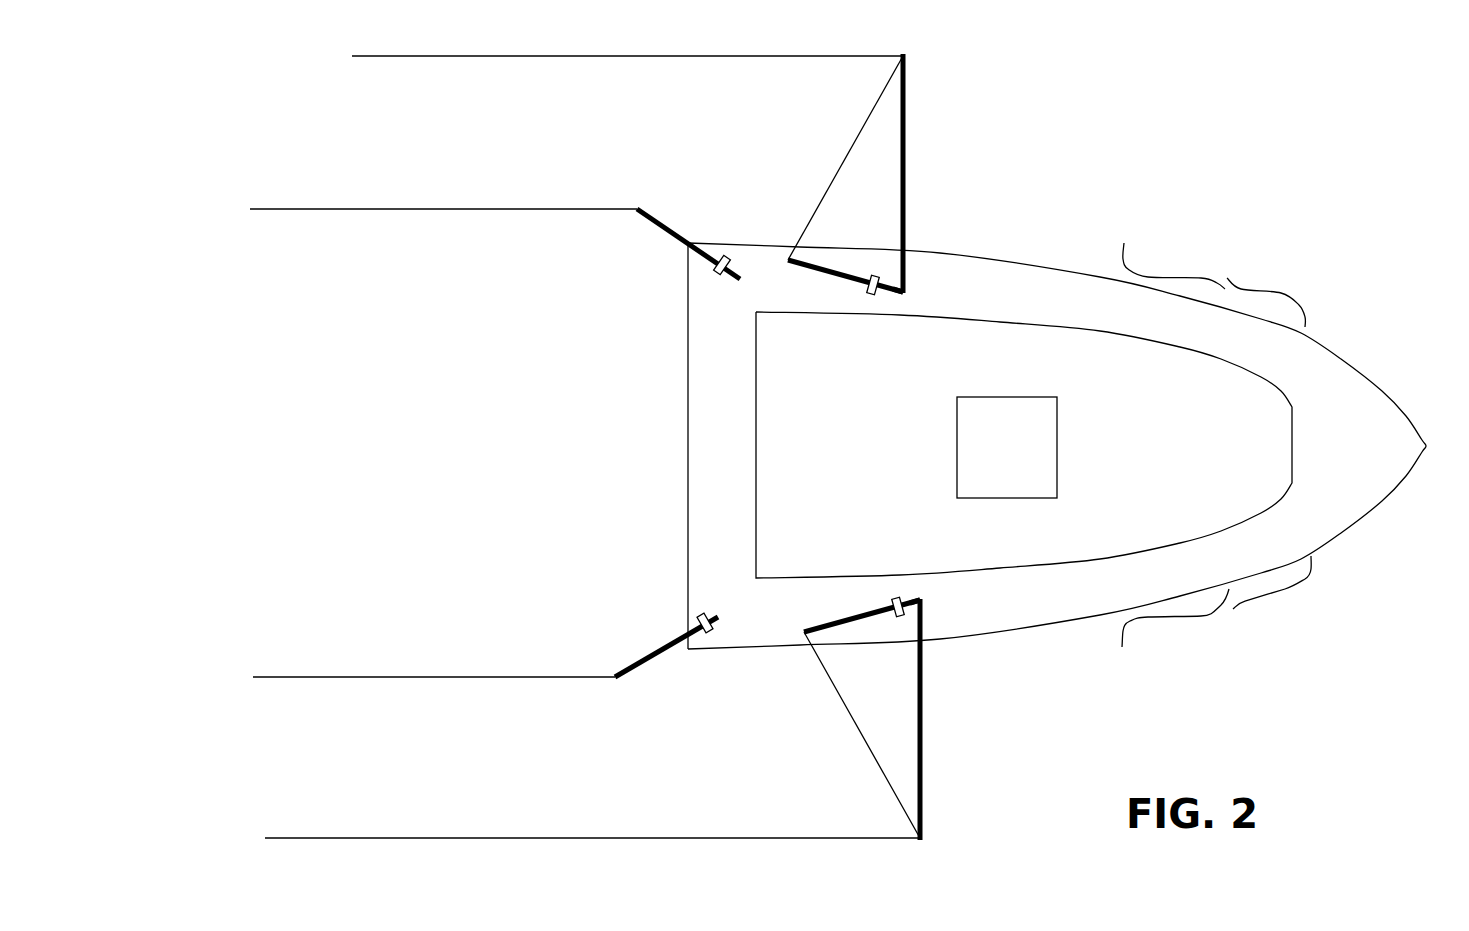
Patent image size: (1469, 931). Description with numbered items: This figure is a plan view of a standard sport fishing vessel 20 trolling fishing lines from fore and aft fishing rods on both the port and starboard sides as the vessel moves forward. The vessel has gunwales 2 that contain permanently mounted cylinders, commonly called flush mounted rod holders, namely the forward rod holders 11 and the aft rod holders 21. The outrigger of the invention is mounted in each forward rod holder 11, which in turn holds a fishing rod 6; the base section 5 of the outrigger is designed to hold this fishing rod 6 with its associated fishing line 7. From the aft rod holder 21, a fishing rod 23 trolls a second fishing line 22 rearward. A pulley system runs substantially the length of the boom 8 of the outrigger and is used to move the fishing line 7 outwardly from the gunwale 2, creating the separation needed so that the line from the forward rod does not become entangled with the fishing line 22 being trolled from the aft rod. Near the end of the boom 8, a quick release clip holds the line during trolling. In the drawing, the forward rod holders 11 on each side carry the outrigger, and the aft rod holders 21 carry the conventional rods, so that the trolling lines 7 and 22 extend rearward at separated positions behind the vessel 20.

The gunwale 2 is at (990, 627).
The fishing vessel 20 is at (1174, 377).
The aft rod holder 21 is at (740, 280).
The fishing line 22 is at (478, 675).
The fishing rod 23 is at (645, 651).
The fishing line 7 is at (668, 837).
The boom 8 is at (922, 782).
The fishing rod 6 is at (843, 620).
The forward rod holder 11 is at (893, 282).
The base section 5 is at (908, 597).